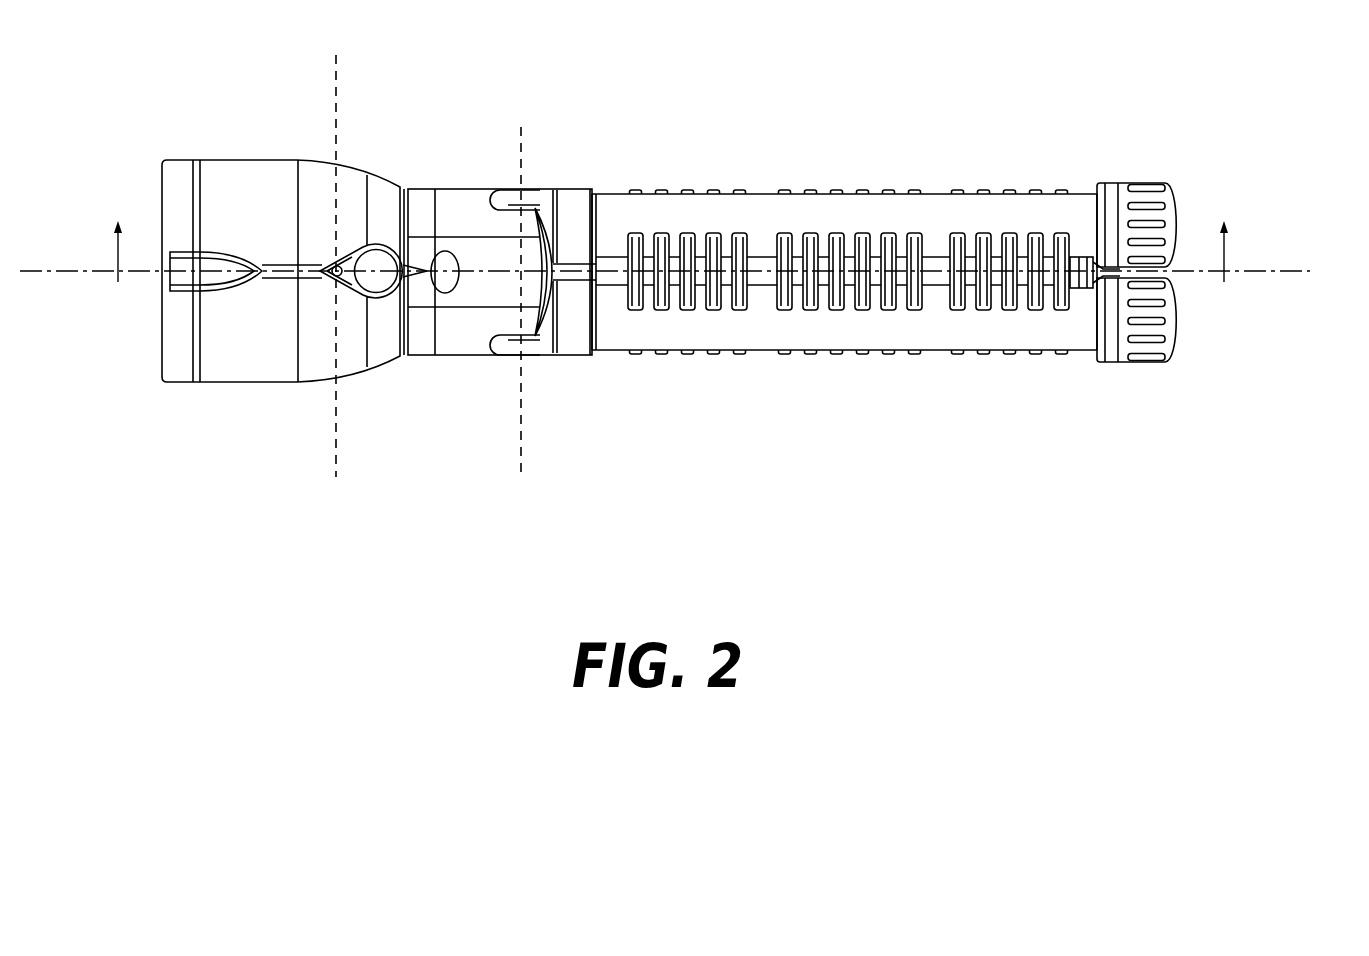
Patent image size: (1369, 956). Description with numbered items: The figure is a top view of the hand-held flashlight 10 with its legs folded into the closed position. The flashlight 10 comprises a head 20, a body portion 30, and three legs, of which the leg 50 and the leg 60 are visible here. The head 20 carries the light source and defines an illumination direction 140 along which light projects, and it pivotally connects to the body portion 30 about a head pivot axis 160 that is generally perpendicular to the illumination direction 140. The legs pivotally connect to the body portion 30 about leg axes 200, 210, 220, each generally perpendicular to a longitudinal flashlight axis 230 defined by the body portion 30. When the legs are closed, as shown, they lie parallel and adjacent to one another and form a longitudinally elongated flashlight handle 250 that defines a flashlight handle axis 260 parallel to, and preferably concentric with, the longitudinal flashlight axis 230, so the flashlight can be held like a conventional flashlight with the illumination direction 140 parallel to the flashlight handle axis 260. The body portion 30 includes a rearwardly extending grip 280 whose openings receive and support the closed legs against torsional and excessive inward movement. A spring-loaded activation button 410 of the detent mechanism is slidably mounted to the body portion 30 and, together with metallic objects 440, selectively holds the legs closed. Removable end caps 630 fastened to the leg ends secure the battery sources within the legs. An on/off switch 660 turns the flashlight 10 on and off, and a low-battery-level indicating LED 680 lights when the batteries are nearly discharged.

The flashlight 10 is at (693, 266).
The head 20 is at (250, 160).
The body portion 30 is at (456, 188).
The leg 50 is at (765, 351).
The leg 60 is at (757, 203).
The illumination direction 140 is at (1218, 273).
The head pivot axis 160 is at (335, 456).
The leg axis 200 is at (650, 302).
The leg axis 210 is at (650, 302).
The leg axis 220 is at (521, 457).
The longitudinal flashlight axis 230 is at (1218, 273).
The flashlight handle 250 is at (844, 286).
The flashlight handle axis 260 is at (1218, 273).
The grip 280 is at (923, 238).
The activation button 410 is at (447, 284).
The metallic objects 440 is at (1079, 257).
The end caps 630 is at (1148, 184).
The on/off switch 660 is at (372, 258).
The low-battery-level indicating LED 680 is at (347, 291).